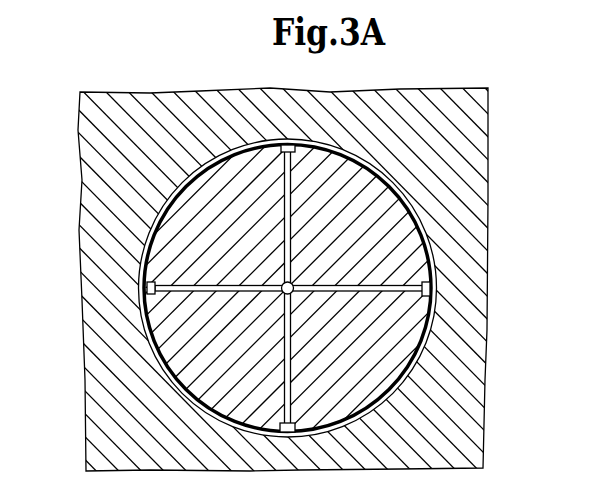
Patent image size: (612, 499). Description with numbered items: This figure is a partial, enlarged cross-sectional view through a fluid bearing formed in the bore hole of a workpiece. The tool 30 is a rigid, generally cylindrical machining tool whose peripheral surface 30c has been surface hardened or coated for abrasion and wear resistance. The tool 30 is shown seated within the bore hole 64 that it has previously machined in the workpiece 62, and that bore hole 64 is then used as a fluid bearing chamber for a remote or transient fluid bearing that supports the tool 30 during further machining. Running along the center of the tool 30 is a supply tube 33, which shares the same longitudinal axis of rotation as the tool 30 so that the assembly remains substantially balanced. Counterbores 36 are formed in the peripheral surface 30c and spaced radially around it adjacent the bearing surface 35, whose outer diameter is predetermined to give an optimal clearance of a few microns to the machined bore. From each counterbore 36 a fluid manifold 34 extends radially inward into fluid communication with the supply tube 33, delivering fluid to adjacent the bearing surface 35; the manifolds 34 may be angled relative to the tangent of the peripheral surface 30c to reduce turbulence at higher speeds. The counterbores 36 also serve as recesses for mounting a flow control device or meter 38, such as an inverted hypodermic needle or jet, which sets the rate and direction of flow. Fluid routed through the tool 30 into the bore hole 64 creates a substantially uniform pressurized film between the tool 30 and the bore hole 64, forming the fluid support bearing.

The tool 30 is at (195, 222).
The peripheral surface 30c is at (383, 180).
The supply tube 33 is at (292, 293).
The fluid manifolds 34 is at (370, 292).
The bearing surface 35 is at (360, 157).
The counterbores 36 is at (428, 298).
The flow control device or meter 38 is at (147, 290).
The workpiece 62 is at (467, 120).
The bore hole 64 is at (418, 208).